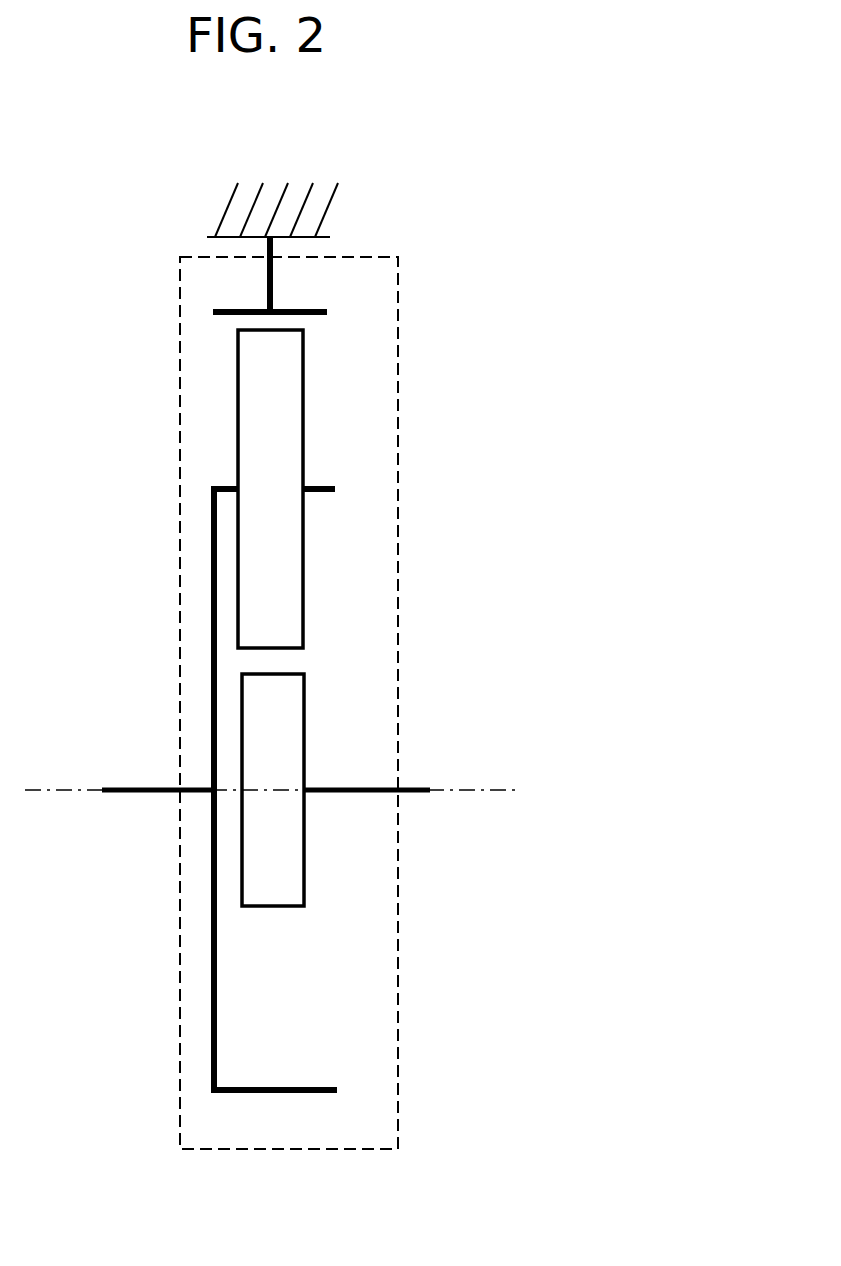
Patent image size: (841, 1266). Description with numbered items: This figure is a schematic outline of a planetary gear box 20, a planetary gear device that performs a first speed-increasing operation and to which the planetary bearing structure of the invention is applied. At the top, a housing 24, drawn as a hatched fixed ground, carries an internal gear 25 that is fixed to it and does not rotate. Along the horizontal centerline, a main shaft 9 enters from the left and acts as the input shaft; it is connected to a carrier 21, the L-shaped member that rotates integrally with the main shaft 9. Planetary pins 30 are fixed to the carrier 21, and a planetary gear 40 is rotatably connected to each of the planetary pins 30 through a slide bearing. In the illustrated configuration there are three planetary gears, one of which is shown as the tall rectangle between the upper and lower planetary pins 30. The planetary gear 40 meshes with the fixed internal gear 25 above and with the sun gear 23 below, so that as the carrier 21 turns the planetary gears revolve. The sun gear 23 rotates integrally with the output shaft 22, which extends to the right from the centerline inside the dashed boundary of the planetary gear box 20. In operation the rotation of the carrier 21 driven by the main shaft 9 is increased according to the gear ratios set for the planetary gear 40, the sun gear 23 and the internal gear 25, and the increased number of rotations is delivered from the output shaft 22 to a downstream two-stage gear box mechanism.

The planetary gear box 20 is at (422, 237).
The housing 24 is at (222, 237).
The internal gear 25 is at (320, 315).
The planetary gear 40 is at (238, 378).
The planetary pin 30 is at (318, 487).
The carrier 21 is at (210, 560).
The sun gear 23 is at (304, 705).
The main shaft 9 is at (137, 788).
The output shaft 22 is at (420, 793).